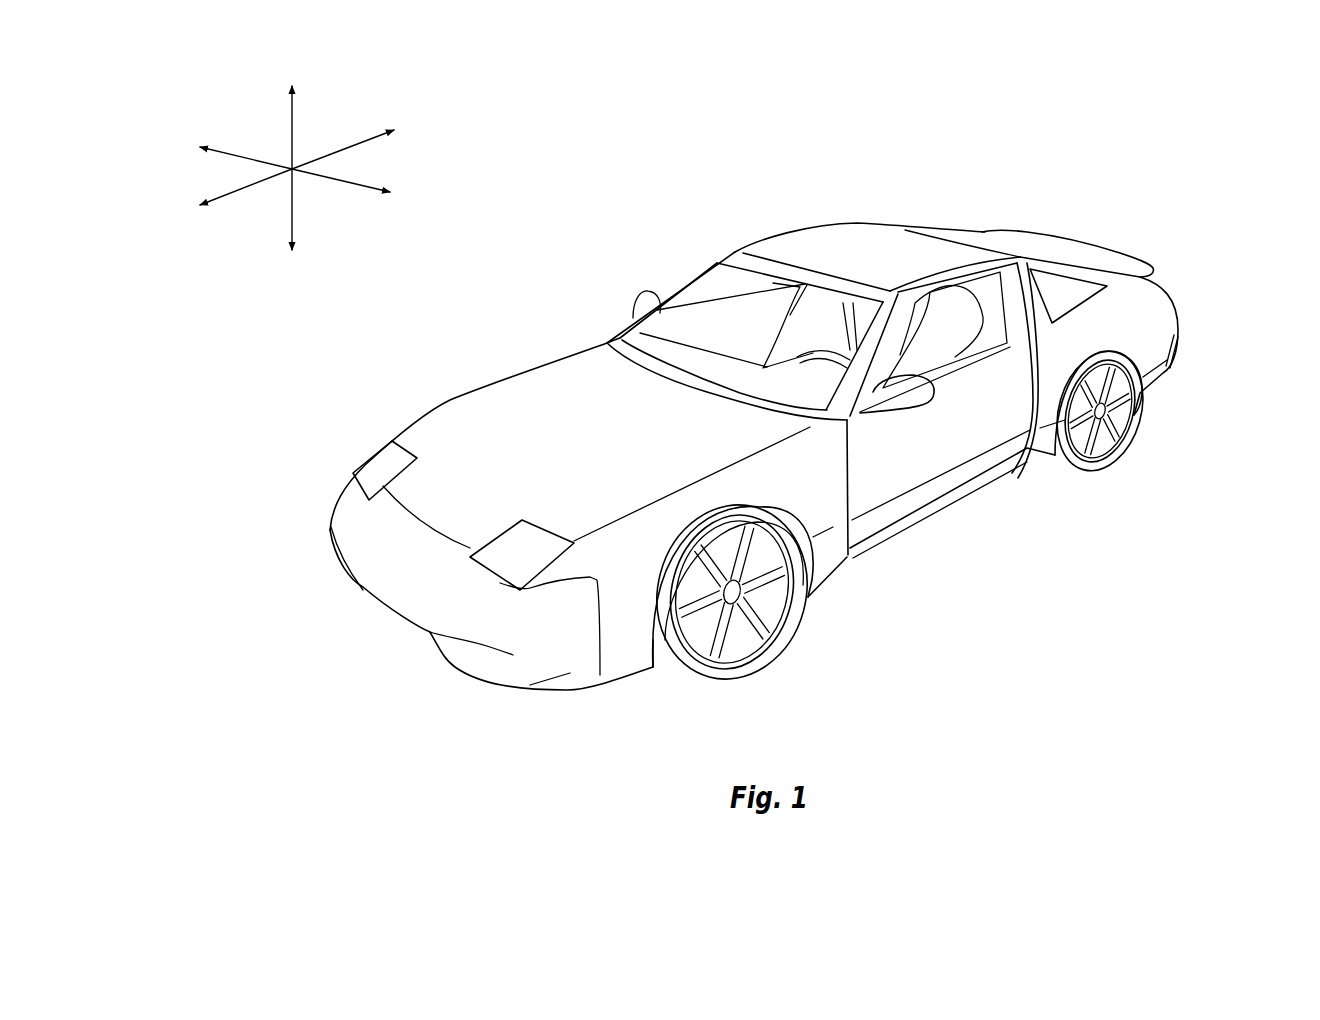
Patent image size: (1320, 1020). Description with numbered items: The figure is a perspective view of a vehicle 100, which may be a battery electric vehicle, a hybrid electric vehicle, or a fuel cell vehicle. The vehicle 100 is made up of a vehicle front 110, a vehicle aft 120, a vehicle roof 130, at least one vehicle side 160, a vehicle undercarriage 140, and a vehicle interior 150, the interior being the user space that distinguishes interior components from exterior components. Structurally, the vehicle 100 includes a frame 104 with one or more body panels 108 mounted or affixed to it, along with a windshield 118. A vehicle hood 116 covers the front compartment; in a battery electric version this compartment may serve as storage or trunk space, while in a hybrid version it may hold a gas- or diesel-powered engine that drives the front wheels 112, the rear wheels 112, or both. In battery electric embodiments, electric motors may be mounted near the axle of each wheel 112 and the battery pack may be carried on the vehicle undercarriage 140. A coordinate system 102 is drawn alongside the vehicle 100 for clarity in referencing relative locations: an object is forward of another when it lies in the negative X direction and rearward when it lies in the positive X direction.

The vehicle 100 is at (699, 149).
The coordinate system 102 is at (292, 169).
The frame 104 is at (947, 508).
The body panels 108 is at (377, 552).
The vehicle front 110 is at (346, 654).
The wheel 112 is at (758, 653).
The vehicle hood 116 is at (493, 410).
The windshield 118 is at (728, 278).
The vehicle aft 120 is at (1160, 254).
The vehicle roof 130 is at (870, 251).
The vehicle undercarriage 140 is at (880, 560).
The vehicle interior 150 is at (718, 325).
The vehicle side 160 is at (970, 449).